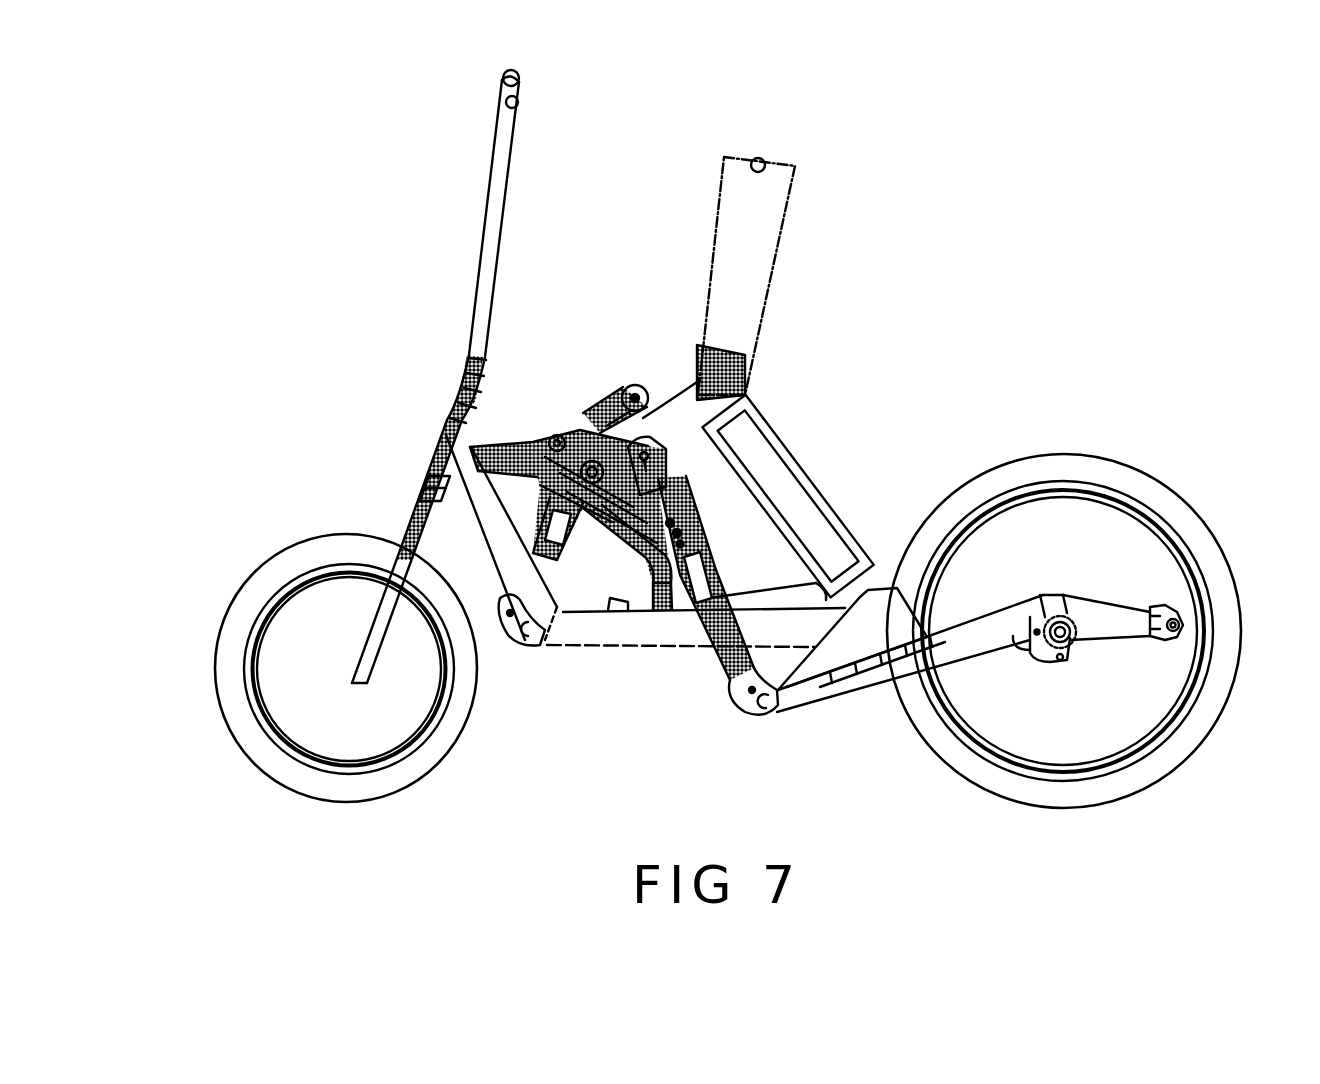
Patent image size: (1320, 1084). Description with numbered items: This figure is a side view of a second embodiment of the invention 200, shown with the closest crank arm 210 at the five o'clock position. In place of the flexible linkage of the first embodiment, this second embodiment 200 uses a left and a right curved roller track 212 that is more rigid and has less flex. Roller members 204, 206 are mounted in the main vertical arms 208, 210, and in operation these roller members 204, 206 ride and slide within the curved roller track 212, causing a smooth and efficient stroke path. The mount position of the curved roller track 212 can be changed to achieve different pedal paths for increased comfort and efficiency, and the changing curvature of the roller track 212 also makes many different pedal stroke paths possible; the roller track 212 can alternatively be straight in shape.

The second embodiment of the invention 200 is at (442, 285).
The roller member 204 is at (591, 458).
The roller member 206 is at (688, 513).
The main vertical arm 208 is at (735, 349).
The crank arm 210 is at (725, 648).
The curved roller track 212 is at (582, 588).